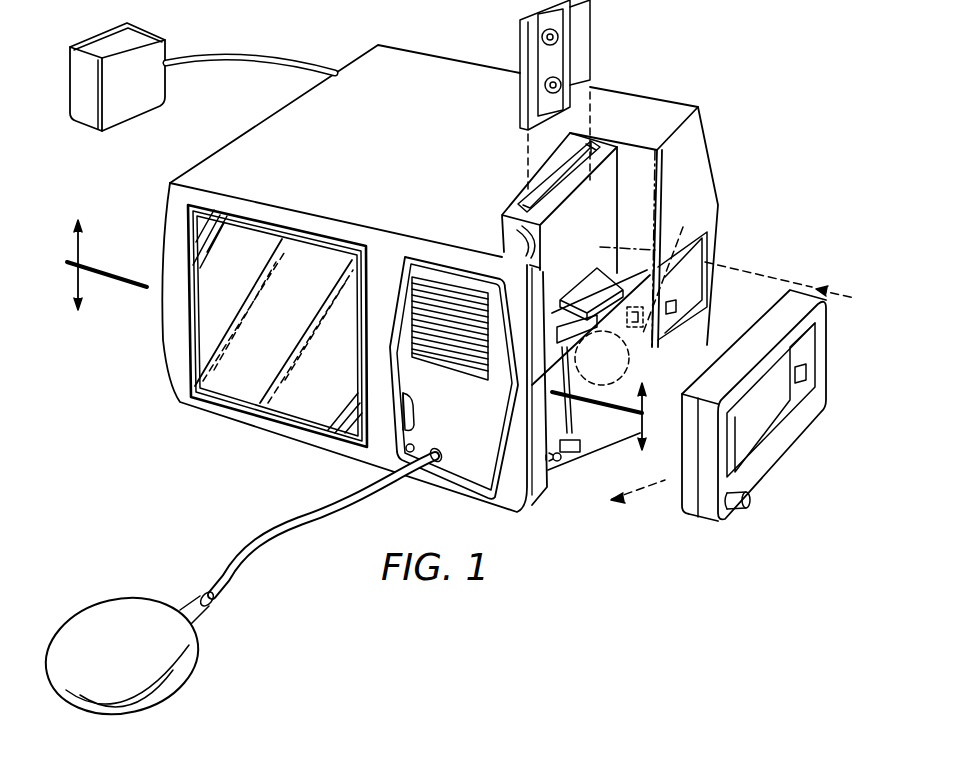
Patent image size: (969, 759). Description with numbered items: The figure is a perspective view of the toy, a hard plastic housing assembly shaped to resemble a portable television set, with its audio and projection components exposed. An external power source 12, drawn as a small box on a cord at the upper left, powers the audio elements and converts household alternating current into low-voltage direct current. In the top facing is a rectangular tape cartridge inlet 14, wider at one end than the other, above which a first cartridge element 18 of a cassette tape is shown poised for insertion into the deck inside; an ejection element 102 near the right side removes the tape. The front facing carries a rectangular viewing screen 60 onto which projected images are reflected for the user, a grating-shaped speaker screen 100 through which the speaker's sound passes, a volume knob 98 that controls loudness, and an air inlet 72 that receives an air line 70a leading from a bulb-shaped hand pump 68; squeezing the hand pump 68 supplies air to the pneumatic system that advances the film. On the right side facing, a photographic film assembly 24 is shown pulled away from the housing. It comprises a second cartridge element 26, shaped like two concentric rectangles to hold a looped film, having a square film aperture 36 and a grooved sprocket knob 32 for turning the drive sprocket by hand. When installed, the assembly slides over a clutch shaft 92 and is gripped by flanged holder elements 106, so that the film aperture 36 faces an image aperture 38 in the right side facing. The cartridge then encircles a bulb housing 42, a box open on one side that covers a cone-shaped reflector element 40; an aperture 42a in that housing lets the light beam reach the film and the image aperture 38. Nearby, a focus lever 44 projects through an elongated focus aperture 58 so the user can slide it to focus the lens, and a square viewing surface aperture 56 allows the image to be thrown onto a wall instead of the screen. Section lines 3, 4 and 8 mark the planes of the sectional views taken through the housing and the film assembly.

The external power source 12 is at (166, 46).
The tape cartridge inlet 14 is at (588, 147).
The first cartridge element 18 is at (522, 38).
The photographic film assembly 24 is at (701, 525).
The second cartridge element 26 is at (785, 440).
The sprocket knob 32 is at (750, 503).
The film aperture 36 is at (806, 382).
The image aperture 38 is at (656, 350).
The reflector element 40 is at (593, 428).
The bulb housing 42 is at (630, 268).
The aperture 42a is at (678, 258).
The focus lever 44 is at (670, 312).
The viewing surface aperture 56 is at (700, 258).
The focus aperture 58 is at (678, 310).
The viewing screen 60 is at (200, 338).
The hand pump 68 is at (197, 668).
The air line 70a is at (312, 520).
The air inlet 72 is at (435, 462).
The clutch shaft 92 is at (557, 465).
The volume knob 98 is at (405, 418).
The speaker screen 100 is at (448, 356).
The ejection element 102 is at (520, 225).
The holder elements 106 is at (414, 446).
The section line 3- 3 is at (356, 330).
The section line 4- 4 is at (370, 391).
The section line 8- 8 is at (749, 416).